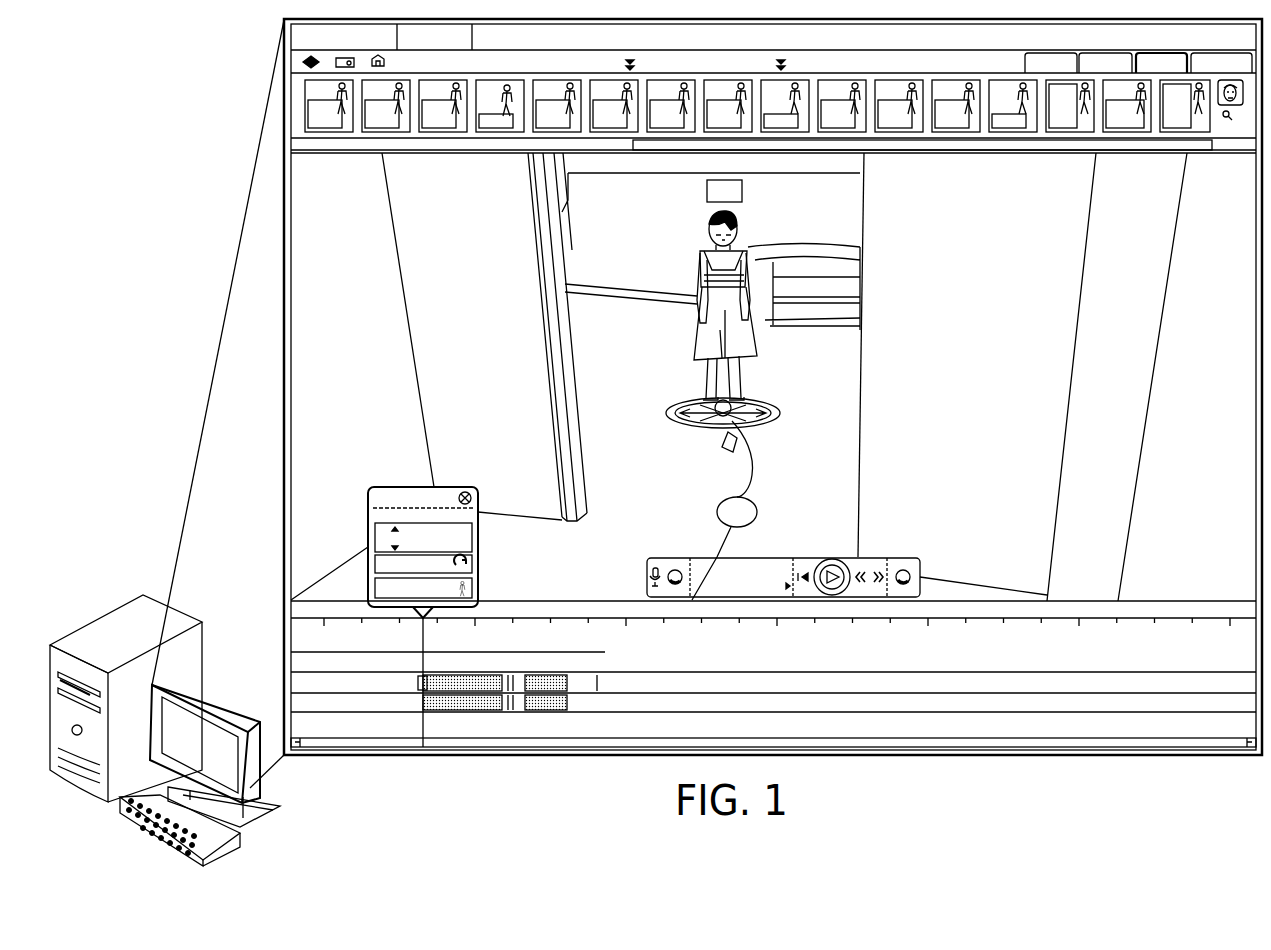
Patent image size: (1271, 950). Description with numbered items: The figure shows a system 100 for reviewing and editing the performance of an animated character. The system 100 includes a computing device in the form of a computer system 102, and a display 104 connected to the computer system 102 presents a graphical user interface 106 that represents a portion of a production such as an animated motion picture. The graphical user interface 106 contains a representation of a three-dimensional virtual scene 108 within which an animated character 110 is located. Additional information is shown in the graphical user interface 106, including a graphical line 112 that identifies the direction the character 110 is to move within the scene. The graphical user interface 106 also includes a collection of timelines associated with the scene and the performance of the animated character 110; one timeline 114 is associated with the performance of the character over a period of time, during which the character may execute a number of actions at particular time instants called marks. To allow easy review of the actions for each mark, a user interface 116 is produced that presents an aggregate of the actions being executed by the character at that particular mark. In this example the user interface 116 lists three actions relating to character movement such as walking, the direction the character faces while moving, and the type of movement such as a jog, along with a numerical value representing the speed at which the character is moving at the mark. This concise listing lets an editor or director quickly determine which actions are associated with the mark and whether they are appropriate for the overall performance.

The system 100 is at (198, 186).
The computer system 102 is at (125, 598).
The display 104 is at (238, 705).
The graphical user interface 106 is at (286, 451).
The three-dimensional virtual scene 108 is at (507, 292).
The animated character 110 is at (707, 248).
The graphical line 112 is at (747, 480).
The timeline 114 is at (287, 675).
The user interface 116 is at (479, 537).